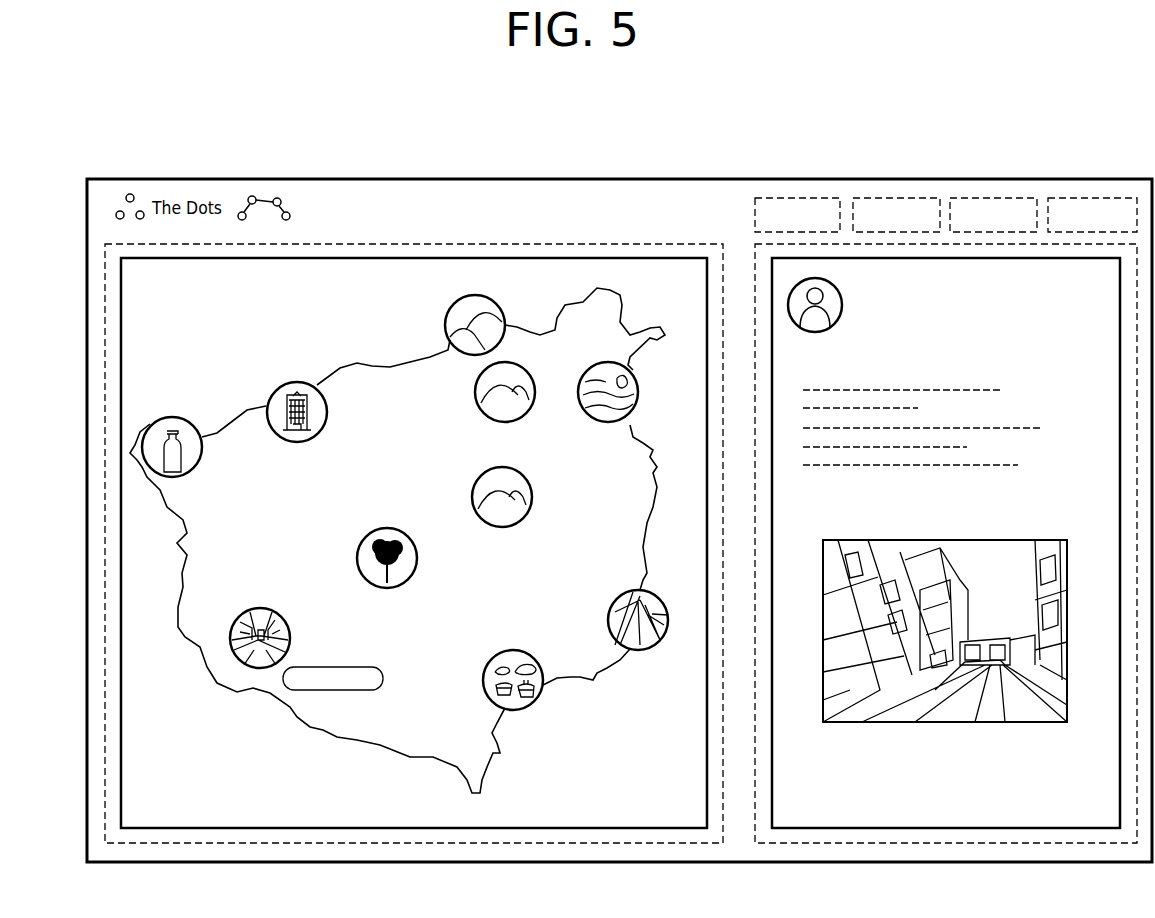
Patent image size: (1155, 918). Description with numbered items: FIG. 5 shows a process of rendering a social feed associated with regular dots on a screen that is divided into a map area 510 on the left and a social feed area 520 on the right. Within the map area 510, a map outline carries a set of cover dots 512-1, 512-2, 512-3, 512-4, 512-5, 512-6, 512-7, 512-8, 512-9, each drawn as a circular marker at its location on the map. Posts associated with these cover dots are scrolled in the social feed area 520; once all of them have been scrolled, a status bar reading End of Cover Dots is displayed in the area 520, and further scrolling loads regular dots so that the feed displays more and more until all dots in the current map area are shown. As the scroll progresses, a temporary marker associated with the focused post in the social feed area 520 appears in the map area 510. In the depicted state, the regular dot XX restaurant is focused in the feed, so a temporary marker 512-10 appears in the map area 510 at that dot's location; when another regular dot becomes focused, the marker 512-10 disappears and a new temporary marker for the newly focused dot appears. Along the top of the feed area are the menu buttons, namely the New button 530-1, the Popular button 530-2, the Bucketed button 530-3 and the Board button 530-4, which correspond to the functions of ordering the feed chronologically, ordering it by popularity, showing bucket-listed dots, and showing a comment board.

The map area 510 is at (625, 843).
The social feed area 520 is at (1038, 843).
The cover dot 512-1 is at (172, 415).
The cover dot 512-2 is at (297, 382).
The cover dot 512-3 is at (445, 321).
The cover dot 512-4 is at (475, 392).
The cover dot 512-5 is at (590, 422).
The cover dot 512-6 is at (502, 527).
The cover dot 512-7 is at (386, 528).
The cover dot 512-8 is at (630, 595).
The cover dot 512-9 is at (512, 650).
The temporary marker 512-10 is at (260, 608).
The New button 530-1 is at (800, 198).
The Popular button 530-2 is at (898, 198).
The Bucketed button 530-3 is at (997, 198).
The Board button 530-4 is at (1095, 198).